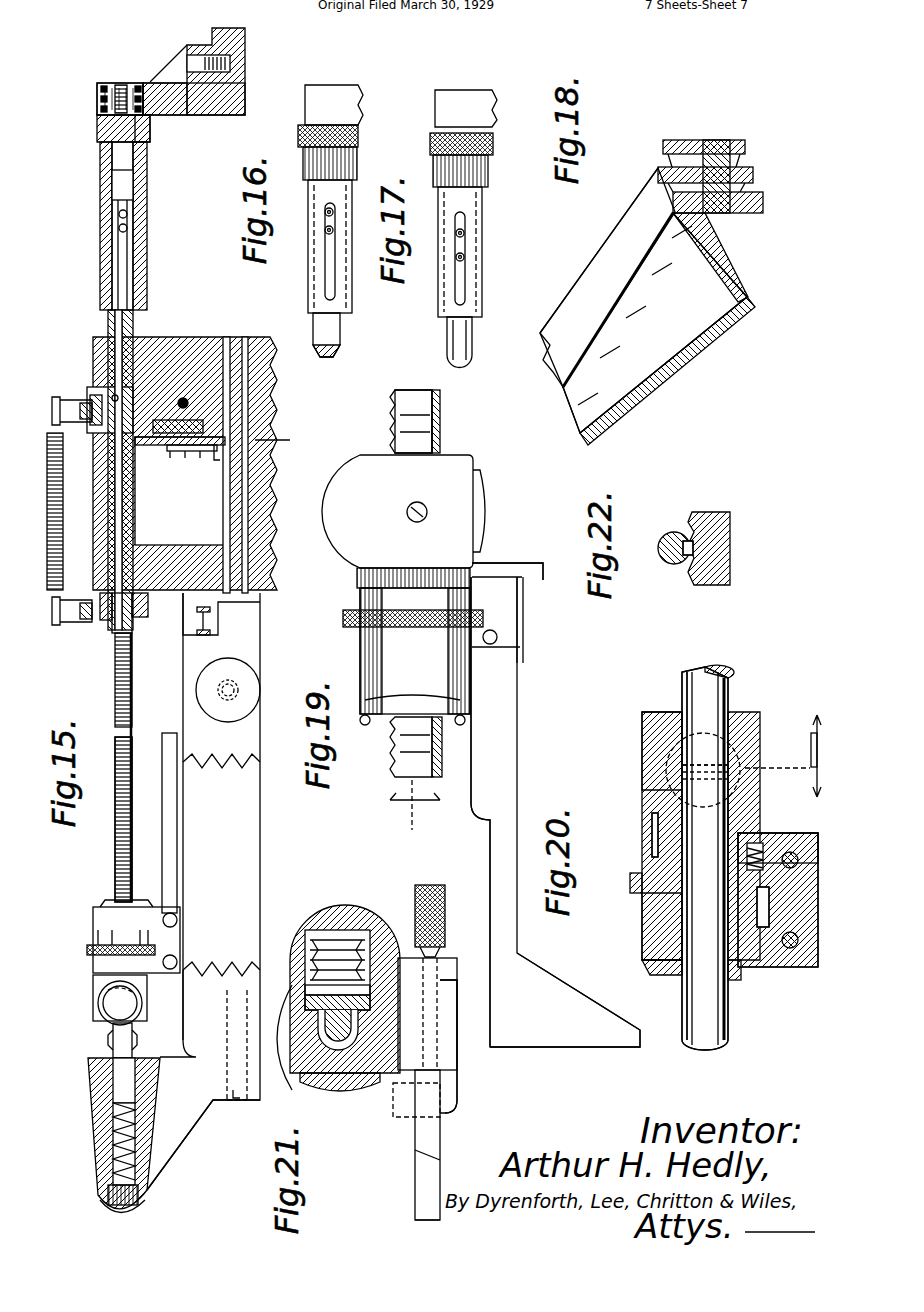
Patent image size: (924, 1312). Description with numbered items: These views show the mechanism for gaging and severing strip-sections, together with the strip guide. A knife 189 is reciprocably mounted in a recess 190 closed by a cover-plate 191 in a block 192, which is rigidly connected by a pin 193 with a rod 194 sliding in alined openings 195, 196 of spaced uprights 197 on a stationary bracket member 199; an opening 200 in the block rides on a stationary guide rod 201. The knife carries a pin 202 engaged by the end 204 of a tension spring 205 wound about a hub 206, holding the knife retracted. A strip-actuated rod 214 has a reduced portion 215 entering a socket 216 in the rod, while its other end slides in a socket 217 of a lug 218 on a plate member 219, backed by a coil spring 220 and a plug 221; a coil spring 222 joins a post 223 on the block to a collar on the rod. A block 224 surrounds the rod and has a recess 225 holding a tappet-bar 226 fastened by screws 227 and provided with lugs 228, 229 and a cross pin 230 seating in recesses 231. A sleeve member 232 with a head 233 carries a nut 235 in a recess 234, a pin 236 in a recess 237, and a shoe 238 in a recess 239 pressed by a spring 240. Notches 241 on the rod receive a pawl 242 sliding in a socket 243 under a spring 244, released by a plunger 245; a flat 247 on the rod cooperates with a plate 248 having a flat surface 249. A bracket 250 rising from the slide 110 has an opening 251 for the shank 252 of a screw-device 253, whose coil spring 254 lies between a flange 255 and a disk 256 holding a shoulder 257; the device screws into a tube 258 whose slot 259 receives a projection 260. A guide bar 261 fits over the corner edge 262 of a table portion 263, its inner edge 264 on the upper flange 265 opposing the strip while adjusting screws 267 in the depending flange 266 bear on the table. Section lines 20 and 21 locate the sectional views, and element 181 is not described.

In FIG. 15, the slide 110 is at (246, 72).
In FIG. 15, the bracket 181 is at (192, 612).
In FIG. 15, the knife 189 is at (172, 440).
In FIG. 15, the recess 190 is at (215, 340).
In FIG. 15, the cover-plate 191 is at (145, 445).
In FIG. 15, the block 192 is at (175, 345).
In FIG. 15, the pin 193 is at (90, 405).
In FIG. 15, the rod 194 is at (112, 330).
In FIG. 17, the rod 194 is at (451, 352).
In FIG. 15, the opening 195 is at (112, 360).
In FIG. 15, the opening 196 is at (100, 570).
In FIG. 15, the upright 197 is at (190, 340).
In FIG. 15, the bracket member 199 is at (277, 497).
In FIG. 15, the opening 200 is at (277, 400).
In FIG. 15, the guide rod 201 is at (238, 340).
In FIG. 15, the pin 202 is at (172, 452).
In FIG. 15, the end of tension spring 204 is at (184, 458).
In FIG. 15, the tension spring 205 is at (285, 447).
In FIG. 15, the hub 206 is at (215, 450).
In FIG. 15, the rod 214 is at (135, 745).
In FIG. 19, the rod 214 is at (392, 400).
In FIG. 20, the rod 214 is at (727, 705).
In FIG. 21, the rod 214 is at (342, 1060).
In FIG. 22, the rod 214 is at (710, 520).
In FIG. 15, the reduced-diameter portion 215 is at (118, 530).
In FIG. 15, the socket 216 is at (116, 515).
In FIG. 21, the socket 216 is at (326, 1055).
In FIG. 15, the socket 217 is at (103, 1088).
In FIG. 15, the lug 218 is at (97, 1142).
In FIG. 15, the plate member 219 is at (185, 1132).
In FIG. 15, the coil spring 220 is at (115, 1172).
In FIG. 15, the plug 221 is at (112, 1218).
In FIG. 15, the coil spring 222 is at (63, 480).
In FIG. 15, the post 223 is at (60, 402).
In FIG. 15, the block 224 is at (72, 622).
In FIG. 19, the block 224 is at (500, 580).
In FIG. 20, the block 224 is at (815, 945).
In FIG. 21, the block 224 is at (452, 985).
In FIG. 21, the recess 225 is at (452, 1060).
In FIG. 15, the tappet-bar 226 is at (165, 855).
In FIG. 19, the tappet-bar 226 is at (508, 762).
In FIG. 21, the tappet-bar 226 is at (418, 1203).
In FIG. 15, the screws 227 is at (177, 960).
In FIG. 20, the screws 227 is at (812, 770).
In FIG. 21, the screws 227 is at (418, 915).
In FIG. 19, the lug 228 is at (582, 992).
In FIG. 19, the lug 229 is at (543, 570).
In FIG. 21, the lug 229 is at (415, 1160).
In FIG. 19, the cross pin 230 is at (493, 700).
In FIG. 21, the cross pin 230 is at (395, 1095).
In FIG. 19, the recesses 231 is at (520, 615).
In FIG. 19, the sleeve member 232 is at (380, 575).
In FIG. 20, the sleeve member 232 is at (645, 912).
In FIG. 15, the head 233 is at (105, 1008).
In FIG. 19, the head 233 is at (360, 465).
In FIG. 20, the head 233 is at (665, 715).
In FIG. 21, the head 233 is at (345, 908).
In FIG. 19, the recess 234 is at (393, 735).
In FIG. 20, the recess 234 is at (763, 950).
In FIG. 15, the nut 235 is at (97, 938).
In FIG. 19, the nut 235 is at (352, 628).
In FIG. 20, the nut 235 is at (630, 880).
In FIG. 20, the pin 236 is at (652, 850).
In FIG. 20, the recess 237 is at (652, 822).
In FIG. 20, the shoe 238 is at (773, 906).
In FIG. 20, the recess 239 is at (708, 857).
In FIG. 20, the spring 240 is at (760, 840).
In FIG. 15, the notches 241 is at (120, 868).
In FIG. 19, the notches 241 is at (395, 425).
In FIG. 22, the notches 241 is at (695, 550).
In FIG. 20, the pawl 242 is at (650, 745).
In FIG. 21, the pawl 242 is at (300, 1000).
In FIG. 20, the socket 243 is at (672, 720).
In FIG. 21, the socket 243 is at (312, 955).
In FIG. 21, the spring 244 is at (338, 985).
In FIG. 22, the spring 244 is at (668, 535).
In FIG. 19, the plunger 245 is at (483, 512).
In FIG. 20, the plunger 245 is at (665, 795).
In FIG. 21, the plunger 245 is at (338, 1060).
In FIG. 15, the flat surface 247 is at (250, 930).
In FIG. 20, the flat surface 247 is at (688, 1020).
In FIG. 15, the plate 248 is at (103, 910).
In FIG. 20, the plate 248 is at (665, 972).
In FIG. 20, the flat surface 249 is at (700, 985).
In FIG. 15, the bracket 250 is at (200, 115).
In FIG. 16, the bracket 250 is at (330, 100).
In FIG. 17, the bracket 250 is at (462, 102).
In FIG. 15, the opening 251 is at (100, 108).
In FIG. 15, the shank 252 is at (110, 88).
In FIG. 15, the screw-device 253 is at (147, 128).
In FIG. 16, the screw-device 253 is at (300, 136).
In FIG. 17, the screw-device 253 is at (432, 141).
In FIG. 15, the coil spring 254 is at (101, 99).
In FIG. 15, the flange 255 is at (102, 125).
In FIG. 15, the disk 256 is at (143, 90).
In FIG. 15, the shoulder 257 is at (160, 118).
In FIG. 15, the tube 258 is at (105, 240).
In FIG. 16, the tube 258 is at (308, 276).
In FIG. 17, the tube 258 is at (440, 272).
In FIG. 16, the slot 259 is at (333, 285).
In FIG. 17, the slot 259 is at (465, 280).
In FIG. 16, the projection 260 is at (326, 226).
In FIG. 17, the projection 260 is at (465, 240).
In FIG. 15, the guide bar 261 is at (203, 891).
In FIG. 18, the guide bar 261 is at (585, 300).
In FIG. 18, the upper corner edge 262 is at (695, 220).
In FIG. 18, the table portion 263 is at (720, 320).
In FIG. 18, the inner edge 264 is at (645, 263).
In FIG. 18, the upper flange 265 is at (613, 262).
In FIG. 18, the depending flange 266 is at (753, 175).
In FIG. 15, the adjusting screws 267 is at (205, 692).
In FIG. 18, the adjusting screws 267 is at (683, 148).
In FIG. 19, the section line 20 is at (415, 817).
In FIG. 20, the section line 21 is at (793, 756).